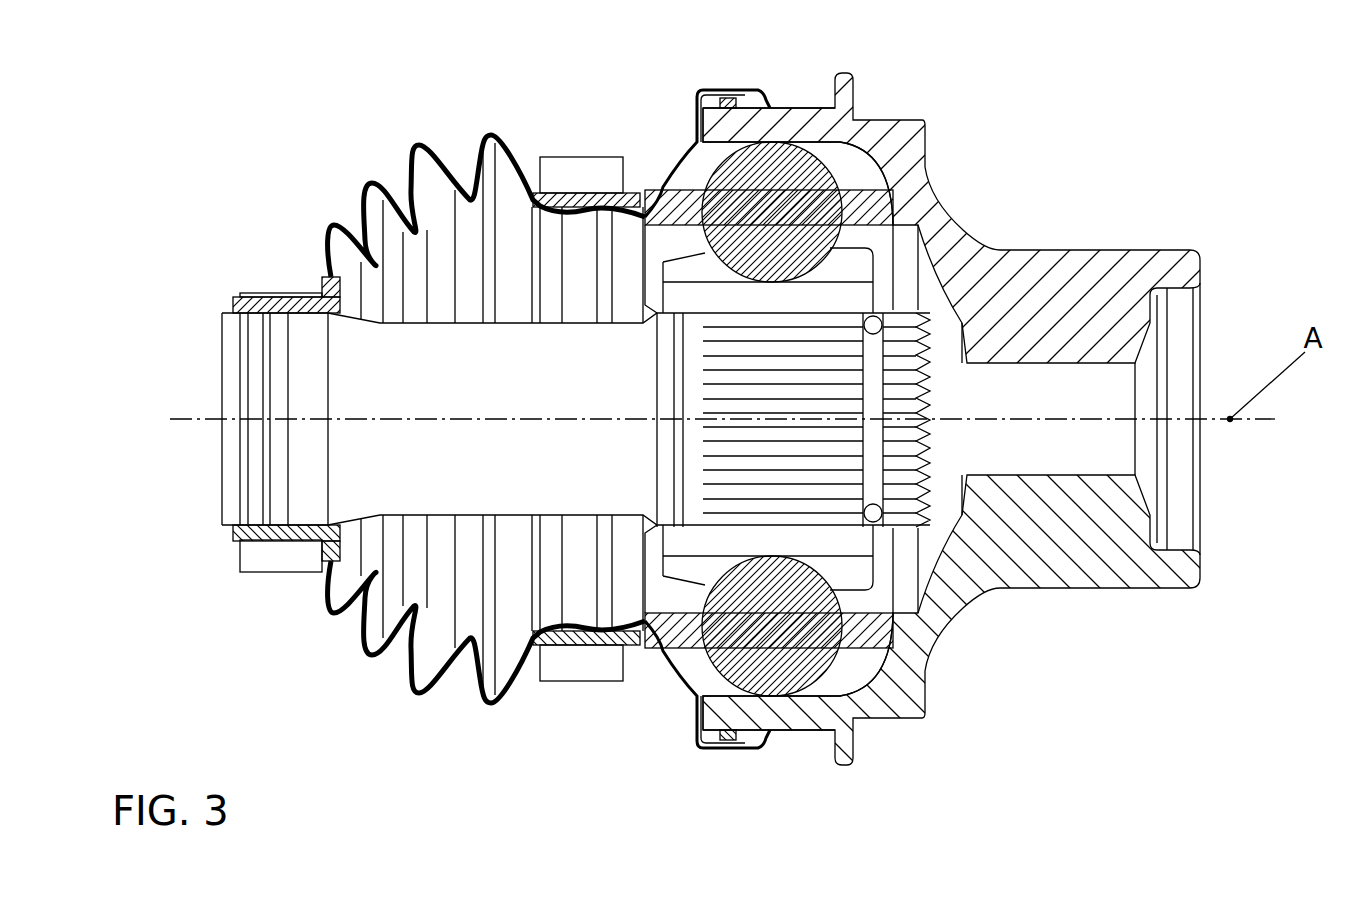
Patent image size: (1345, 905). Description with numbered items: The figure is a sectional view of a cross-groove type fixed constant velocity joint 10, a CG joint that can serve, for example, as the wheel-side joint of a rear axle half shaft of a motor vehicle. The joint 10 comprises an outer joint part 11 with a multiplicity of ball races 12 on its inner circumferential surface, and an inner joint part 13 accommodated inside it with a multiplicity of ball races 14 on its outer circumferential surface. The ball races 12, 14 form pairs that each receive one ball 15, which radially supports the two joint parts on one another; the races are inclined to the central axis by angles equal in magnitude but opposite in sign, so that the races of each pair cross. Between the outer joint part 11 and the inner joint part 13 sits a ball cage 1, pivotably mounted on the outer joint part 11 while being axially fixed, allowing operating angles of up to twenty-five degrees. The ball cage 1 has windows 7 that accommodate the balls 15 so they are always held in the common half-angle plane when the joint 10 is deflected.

The fixed constant velocity joint 10 is at (345, 128).
The ball cage 1 is at (685, 212).
The windows 7 is at (698, 643).
The outer joint part 11 is at (907, 147).
The ball races 12 is at (840, 147).
The inner joint part 13 is at (685, 305).
The ball races 14 is at (693, 282).
The ball 15 is at (772, 202).